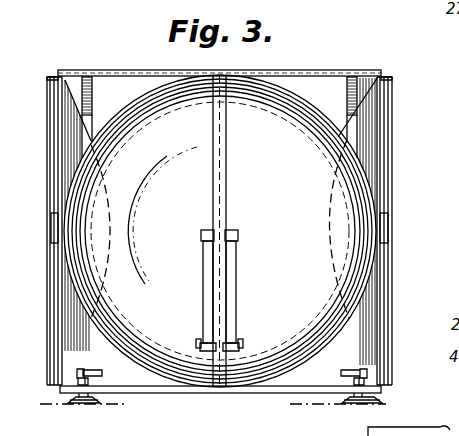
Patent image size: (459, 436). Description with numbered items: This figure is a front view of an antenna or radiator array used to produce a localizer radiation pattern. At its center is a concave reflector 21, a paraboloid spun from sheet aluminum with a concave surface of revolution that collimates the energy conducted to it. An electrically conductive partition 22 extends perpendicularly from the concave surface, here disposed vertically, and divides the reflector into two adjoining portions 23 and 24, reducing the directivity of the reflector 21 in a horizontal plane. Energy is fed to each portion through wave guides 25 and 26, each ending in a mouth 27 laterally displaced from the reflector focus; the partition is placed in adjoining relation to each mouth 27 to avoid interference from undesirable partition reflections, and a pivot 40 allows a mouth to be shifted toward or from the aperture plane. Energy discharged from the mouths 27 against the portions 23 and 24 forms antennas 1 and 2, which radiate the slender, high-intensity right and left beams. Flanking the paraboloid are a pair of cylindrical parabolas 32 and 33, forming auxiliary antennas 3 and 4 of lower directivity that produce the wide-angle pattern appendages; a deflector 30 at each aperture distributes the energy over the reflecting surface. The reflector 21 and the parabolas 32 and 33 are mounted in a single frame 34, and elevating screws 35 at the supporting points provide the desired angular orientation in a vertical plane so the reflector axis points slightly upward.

The antenna 1 is at (294, 243).
The antenna 2 is at (152, 243).
The auxiliary antenna 3 is at (54, 191).
The auxiliary antenna 4 is at (389, 200).
The concave reflector 21 is at (291, 97).
The electrically conductive partition 22 is at (227, 182).
The reflector portion 23 is at (164, 355).
The reflector portion 24 is at (266, 358).
The wave guide 25 is at (203, 291).
The wave guide 26 is at (237, 291).
The mouth 27 is at (204, 232).
The deflector 30 is at (54, 229).
The cylindrical parabola 32 is at (49, 77).
The cylindrical parabola 33 is at (392, 77).
The frame 34 is at (112, 70).
The elevating screw 35 is at (85, 399).
The pivot 40 is at (199, 344).